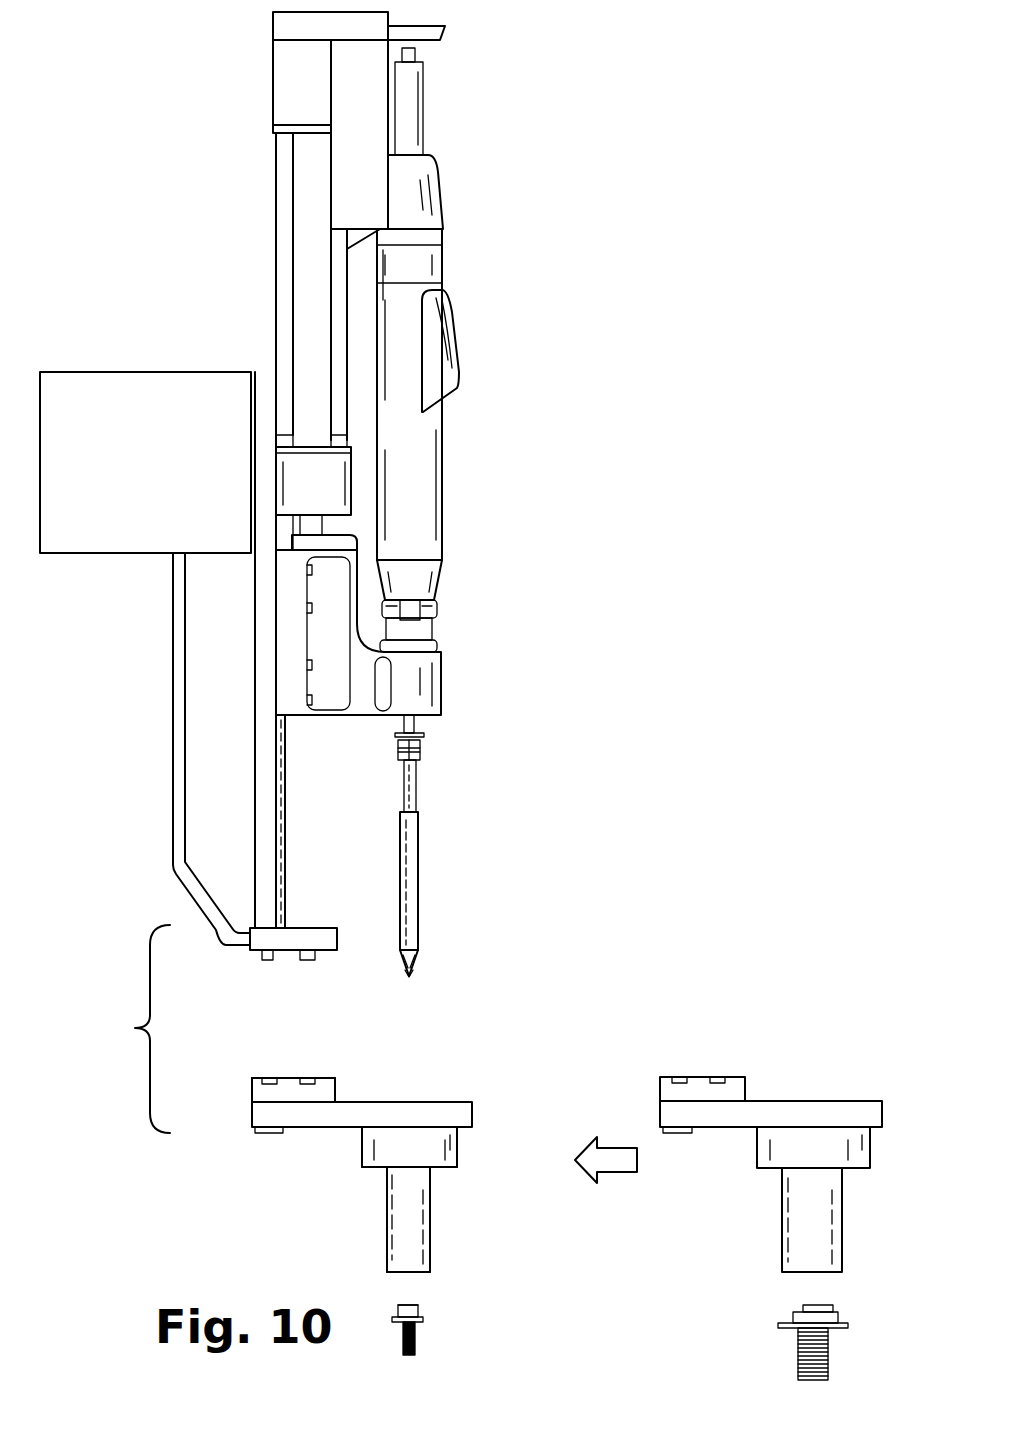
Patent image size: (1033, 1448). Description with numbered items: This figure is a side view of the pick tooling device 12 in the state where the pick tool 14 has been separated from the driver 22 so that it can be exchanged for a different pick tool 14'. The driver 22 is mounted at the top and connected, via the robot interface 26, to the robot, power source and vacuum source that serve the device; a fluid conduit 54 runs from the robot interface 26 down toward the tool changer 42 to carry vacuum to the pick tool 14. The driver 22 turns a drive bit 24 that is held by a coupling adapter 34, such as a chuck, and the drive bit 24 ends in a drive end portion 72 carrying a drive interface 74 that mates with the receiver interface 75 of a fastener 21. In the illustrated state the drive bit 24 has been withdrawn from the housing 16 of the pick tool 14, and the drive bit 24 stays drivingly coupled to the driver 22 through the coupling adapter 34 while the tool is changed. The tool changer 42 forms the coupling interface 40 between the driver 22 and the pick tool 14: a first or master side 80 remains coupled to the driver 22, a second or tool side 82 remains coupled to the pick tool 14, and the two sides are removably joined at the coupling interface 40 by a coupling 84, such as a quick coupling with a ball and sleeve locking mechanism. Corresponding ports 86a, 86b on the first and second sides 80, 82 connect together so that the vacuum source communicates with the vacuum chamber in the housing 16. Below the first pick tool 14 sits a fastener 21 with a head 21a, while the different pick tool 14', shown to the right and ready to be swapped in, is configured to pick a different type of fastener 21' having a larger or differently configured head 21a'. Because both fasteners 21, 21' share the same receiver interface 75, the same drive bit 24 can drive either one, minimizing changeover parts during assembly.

The pick tooling device 12 is at (135, 130).
The pick tool 14 is at (405, 1148).
The different pick tool 14' is at (802, 1150).
The housing 16 is at (470, 1168).
The fastener 21 is at (450, 1345).
The different type of fastener 21' is at (853, 1354).
The head 21a is at (456, 1313).
The larger head 21a' is at (856, 1313).
The driver 22 is at (485, 498).
The drive bit 24 is at (410, 895).
The robot interface 26 is at (145, 462).
The coupling adapter 34 is at (422, 750).
The coupling interface 40 is at (287, 955).
The tool changer 42 is at (134, 1029).
The fluid conduit 54 is at (173, 683).
The drive end portion 72 is at (415, 970).
The drive interface 74 is at (410, 977).
The receiver interface 75 is at (407, 1305).
The first side 80 is at (250, 952).
The second side 82 is at (252, 1088).
The coupling 84 is at (268, 960).
The port 86a is at (307, 960).
The port 86b is at (310, 1077).